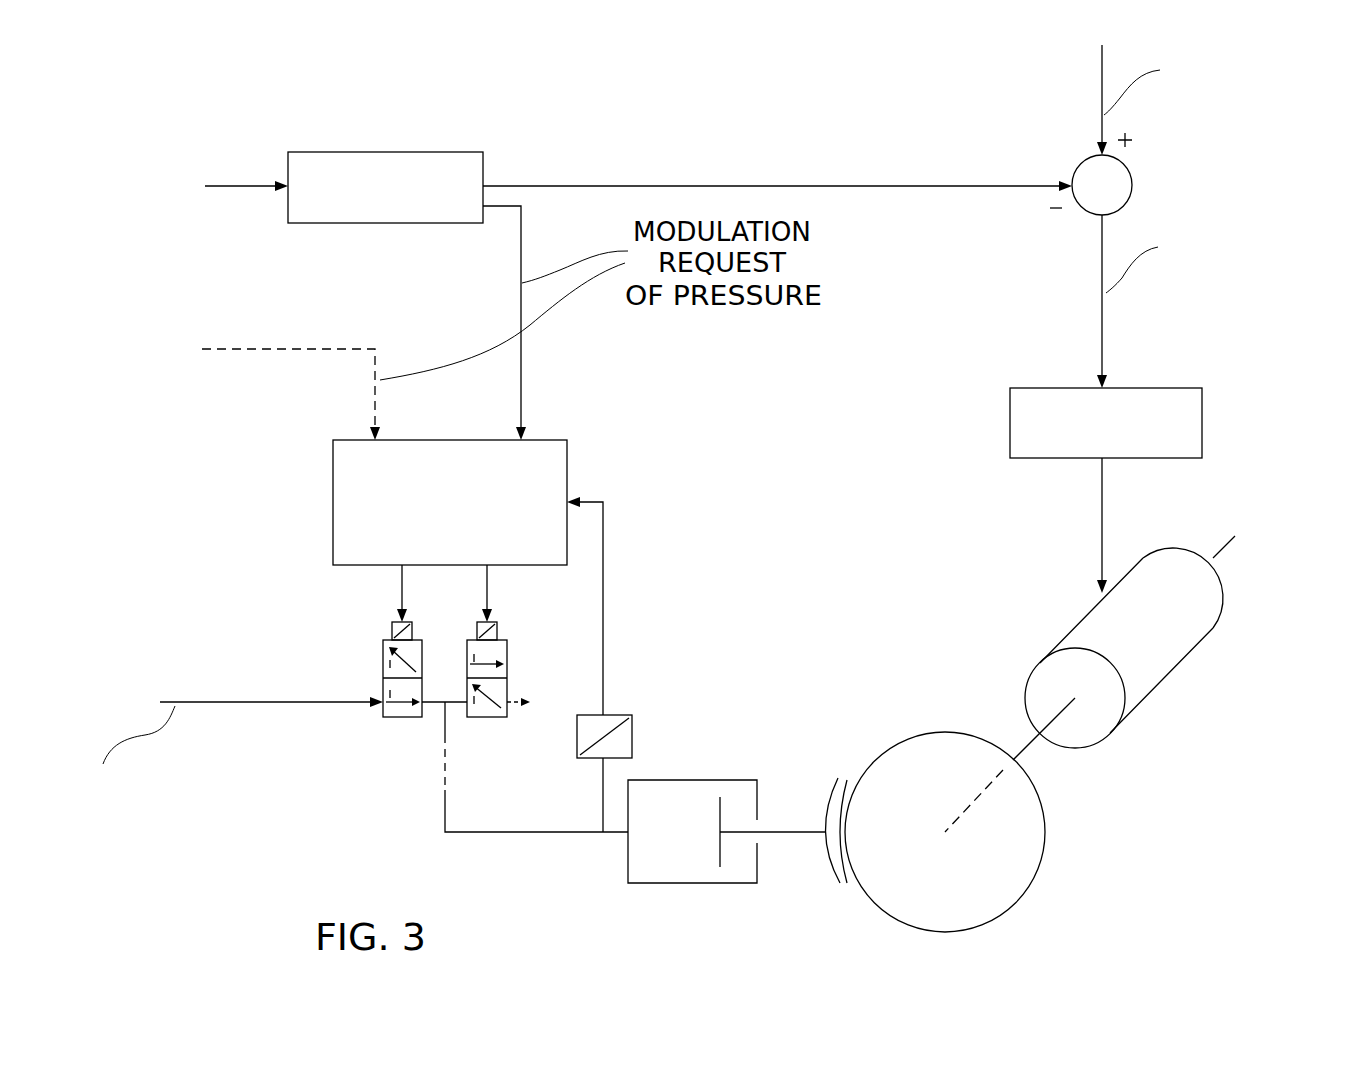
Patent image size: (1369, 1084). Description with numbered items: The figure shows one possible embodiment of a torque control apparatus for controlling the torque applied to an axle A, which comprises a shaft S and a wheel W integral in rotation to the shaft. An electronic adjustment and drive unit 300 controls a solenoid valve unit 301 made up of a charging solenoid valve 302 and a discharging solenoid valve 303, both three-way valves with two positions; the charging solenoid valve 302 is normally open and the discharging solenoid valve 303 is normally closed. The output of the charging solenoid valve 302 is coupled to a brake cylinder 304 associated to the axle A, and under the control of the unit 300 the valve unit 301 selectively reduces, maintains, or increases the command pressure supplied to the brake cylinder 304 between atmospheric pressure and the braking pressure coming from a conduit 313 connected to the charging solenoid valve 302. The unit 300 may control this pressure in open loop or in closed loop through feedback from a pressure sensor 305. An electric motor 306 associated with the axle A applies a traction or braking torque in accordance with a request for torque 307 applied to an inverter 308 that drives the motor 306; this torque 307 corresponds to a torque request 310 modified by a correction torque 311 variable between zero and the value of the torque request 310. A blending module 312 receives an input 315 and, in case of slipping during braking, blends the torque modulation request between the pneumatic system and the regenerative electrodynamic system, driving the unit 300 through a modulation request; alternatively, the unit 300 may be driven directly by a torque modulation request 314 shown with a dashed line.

The electronic adjustment and drive unit 300 is at (567, 440).
The solenoid valve unit 301 is at (358, 624).
The charging solenoid valve 302 is at (383, 664).
The discharging solenoid valve 303 is at (508, 659).
The brake cylinder 304 is at (642, 887).
The pressure sensor 305 is at (634, 742).
The electric motor 306 is at (1140, 685).
The request for torque 307 is at (1099, 313).
The inverter 308 is at (1010, 425).
The torque request 310 is at (1098, 73).
The correction torque 311 is at (722, 186).
The blending module 312 is at (392, 152).
The conduit 313 is at (222, 698).
The torque modulation request 314 is at (287, 347).
The blending input signal 315 is at (221, 186).
The axle A is at (958, 746).
The wheel W is at (908, 790).
The shaft S is at (947, 836).